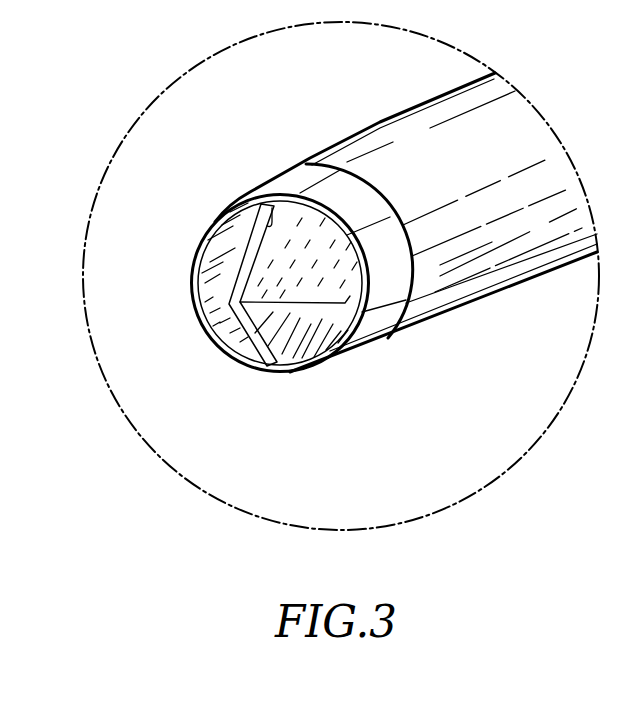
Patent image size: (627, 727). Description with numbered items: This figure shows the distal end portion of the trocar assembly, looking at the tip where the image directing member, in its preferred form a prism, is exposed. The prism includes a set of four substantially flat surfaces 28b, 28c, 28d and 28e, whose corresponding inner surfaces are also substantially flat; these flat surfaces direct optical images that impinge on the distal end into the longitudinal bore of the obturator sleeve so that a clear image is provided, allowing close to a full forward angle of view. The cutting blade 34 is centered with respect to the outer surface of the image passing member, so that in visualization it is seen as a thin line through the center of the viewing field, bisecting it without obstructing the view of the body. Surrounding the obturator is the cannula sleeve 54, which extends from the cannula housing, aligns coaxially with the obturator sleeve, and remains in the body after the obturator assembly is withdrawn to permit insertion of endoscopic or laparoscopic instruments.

The substantially flat surface 28b is at (220, 252).
The substantially flat surface 28c is at (298, 188).
The substantially flat surface 28d is at (303, 352).
The substantially flat surface 28e is at (216, 313).
The cutting blade 34 is at (227, 298).
The cannula sleeve 54 is at (450, 322).